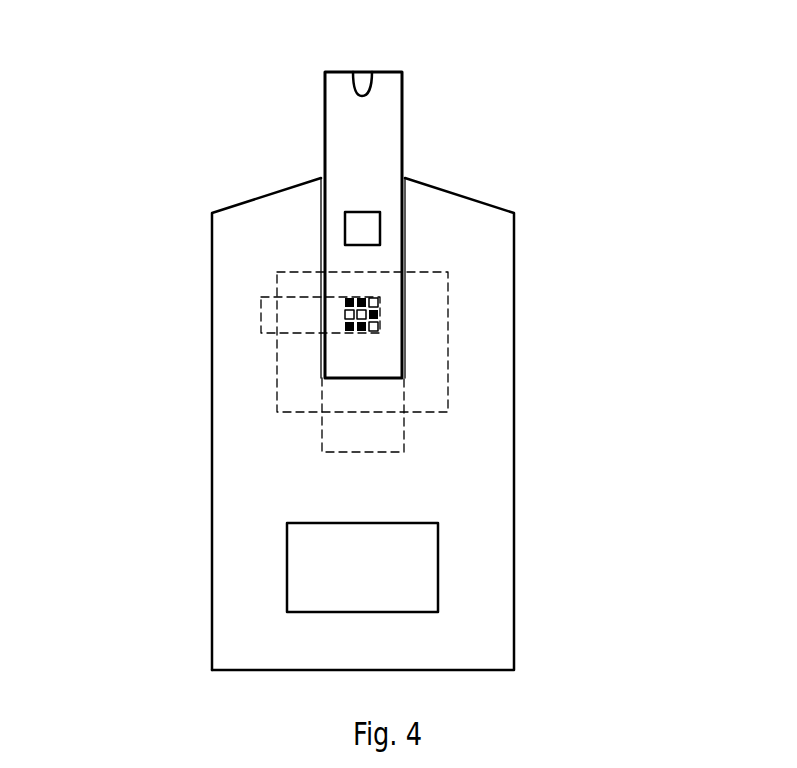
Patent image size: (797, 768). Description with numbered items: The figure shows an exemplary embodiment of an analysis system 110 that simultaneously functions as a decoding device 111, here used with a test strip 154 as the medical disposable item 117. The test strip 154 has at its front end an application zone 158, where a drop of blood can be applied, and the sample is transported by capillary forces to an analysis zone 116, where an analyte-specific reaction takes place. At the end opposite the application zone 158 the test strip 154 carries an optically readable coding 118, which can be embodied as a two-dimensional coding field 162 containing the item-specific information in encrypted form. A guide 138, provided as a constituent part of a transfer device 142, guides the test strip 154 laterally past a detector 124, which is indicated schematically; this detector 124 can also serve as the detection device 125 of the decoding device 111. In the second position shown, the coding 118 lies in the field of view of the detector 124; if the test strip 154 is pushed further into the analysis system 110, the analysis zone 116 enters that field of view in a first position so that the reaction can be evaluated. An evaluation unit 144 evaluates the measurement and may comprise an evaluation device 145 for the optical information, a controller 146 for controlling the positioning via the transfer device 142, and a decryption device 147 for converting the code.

The analysis system 110 is at (484, 355).
The decoding device 111 is at (609, 178).
The test strip 154 is at (455, 224).
The medical disposable item 117 is at (388, 113).
The application zone 158 is at (361, 82).
The analysis zone 116 is at (363, 230).
The coding 118 is at (495, 306).
The coding field 162 is at (367, 310).
The detector 124 is at (209, 308).
The detection device 125 is at (258, 307).
The guide 138 is at (412, 279).
The transfer device 142 is at (321, 220).
The evaluation unit 144 is at (362, 567).
The evaluation device 145 is at (362, 567).
The controller 146 is at (362, 567).
The decryption device 147 is at (408, 561).